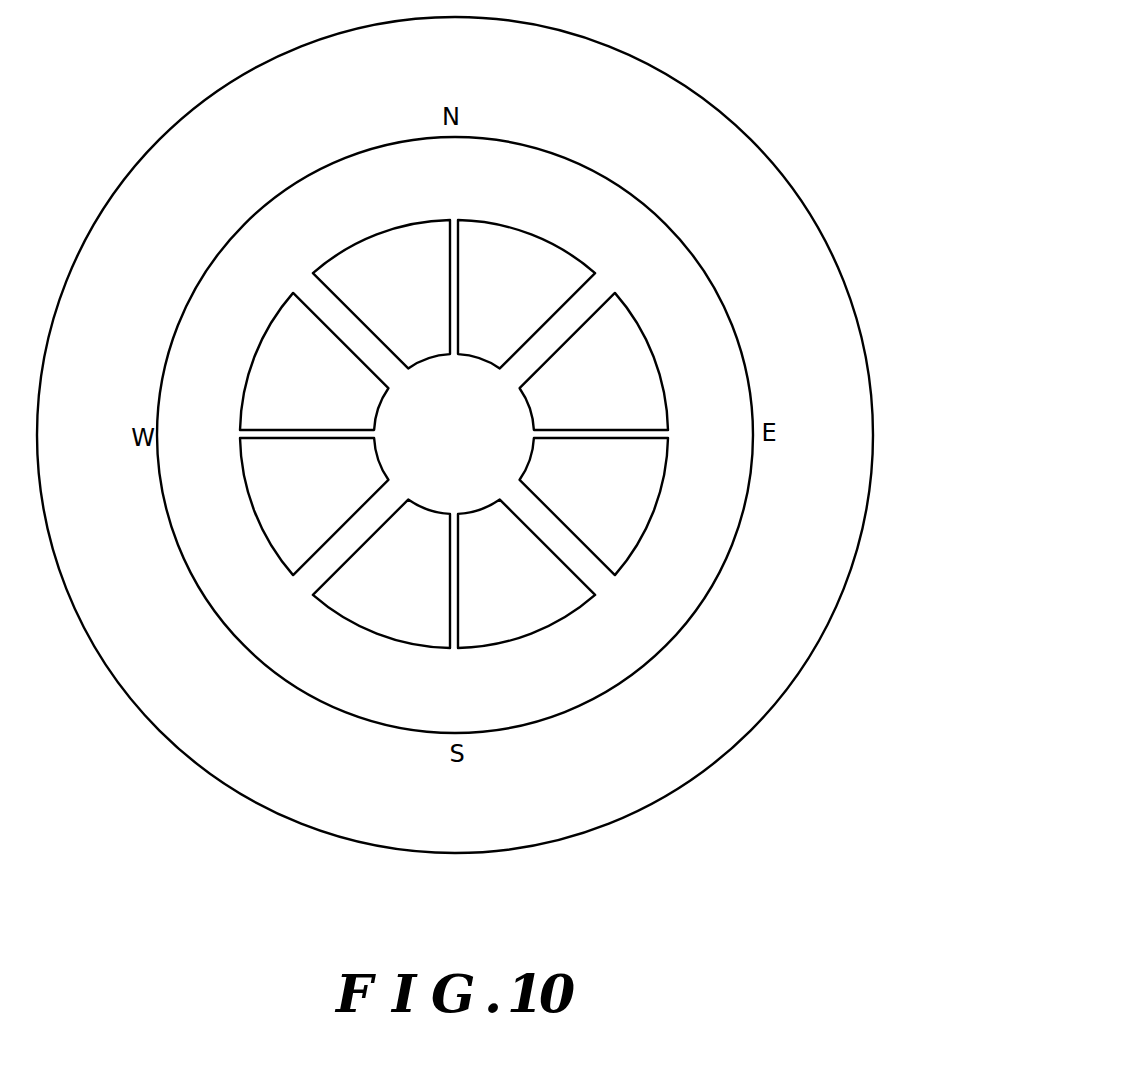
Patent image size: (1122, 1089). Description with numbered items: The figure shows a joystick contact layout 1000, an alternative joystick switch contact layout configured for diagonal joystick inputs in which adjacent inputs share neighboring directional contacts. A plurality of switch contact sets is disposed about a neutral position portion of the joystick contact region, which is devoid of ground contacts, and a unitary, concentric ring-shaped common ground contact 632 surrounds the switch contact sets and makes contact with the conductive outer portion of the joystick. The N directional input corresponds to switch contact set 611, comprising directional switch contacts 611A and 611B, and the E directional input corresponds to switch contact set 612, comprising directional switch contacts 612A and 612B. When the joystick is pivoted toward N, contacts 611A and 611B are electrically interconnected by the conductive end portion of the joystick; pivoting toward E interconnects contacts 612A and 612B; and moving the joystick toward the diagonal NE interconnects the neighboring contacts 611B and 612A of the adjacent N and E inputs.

The ground contact 632 is at (672, 103).
The switch contact set 611 is at (476, 177).
The directional switch contact 611A is at (383, 243).
The directional switch contact 611B is at (512, 245).
The switch contact set 612 is at (718, 450).
The directional switch contact 612A is at (638, 358).
The directional switch contact 612B is at (643, 503).
The joystick contact layout 1000 is at (706, 904).